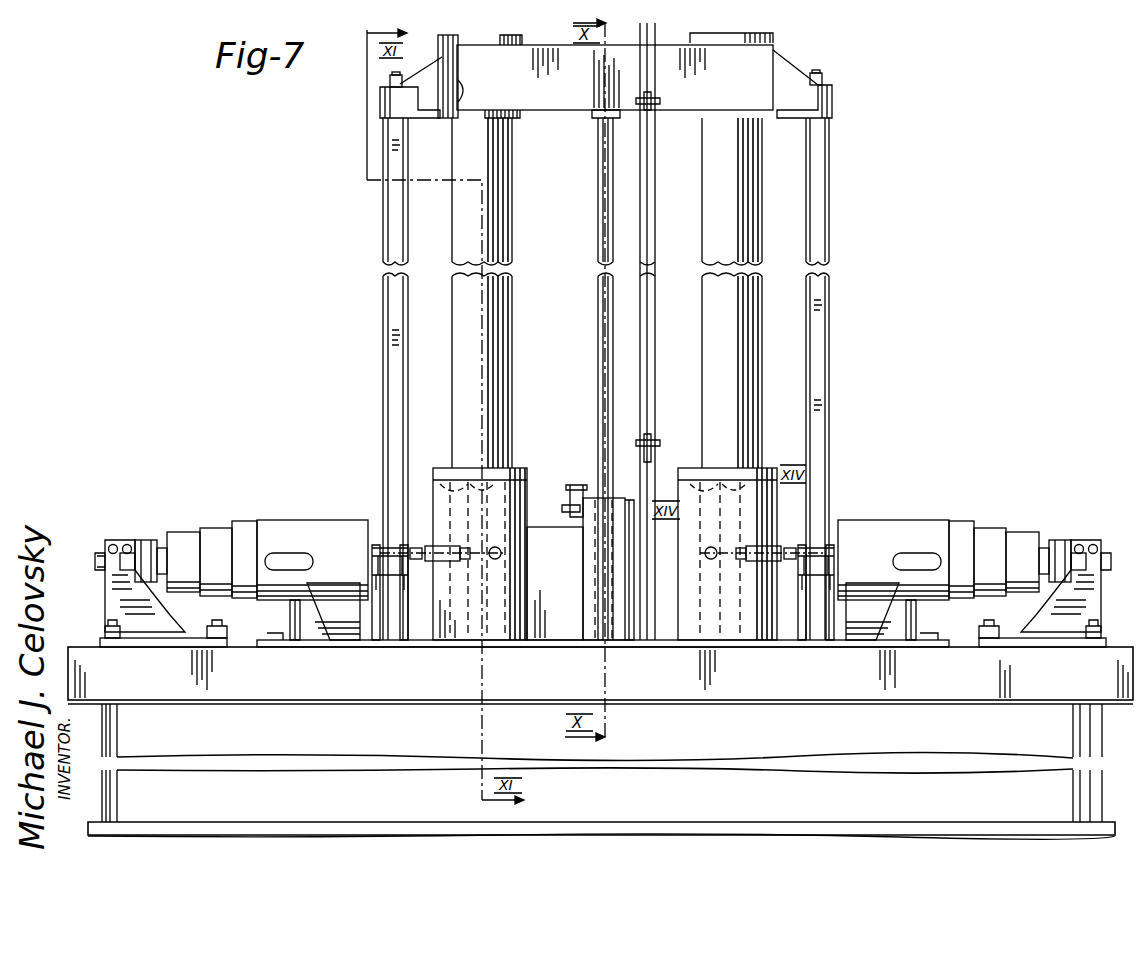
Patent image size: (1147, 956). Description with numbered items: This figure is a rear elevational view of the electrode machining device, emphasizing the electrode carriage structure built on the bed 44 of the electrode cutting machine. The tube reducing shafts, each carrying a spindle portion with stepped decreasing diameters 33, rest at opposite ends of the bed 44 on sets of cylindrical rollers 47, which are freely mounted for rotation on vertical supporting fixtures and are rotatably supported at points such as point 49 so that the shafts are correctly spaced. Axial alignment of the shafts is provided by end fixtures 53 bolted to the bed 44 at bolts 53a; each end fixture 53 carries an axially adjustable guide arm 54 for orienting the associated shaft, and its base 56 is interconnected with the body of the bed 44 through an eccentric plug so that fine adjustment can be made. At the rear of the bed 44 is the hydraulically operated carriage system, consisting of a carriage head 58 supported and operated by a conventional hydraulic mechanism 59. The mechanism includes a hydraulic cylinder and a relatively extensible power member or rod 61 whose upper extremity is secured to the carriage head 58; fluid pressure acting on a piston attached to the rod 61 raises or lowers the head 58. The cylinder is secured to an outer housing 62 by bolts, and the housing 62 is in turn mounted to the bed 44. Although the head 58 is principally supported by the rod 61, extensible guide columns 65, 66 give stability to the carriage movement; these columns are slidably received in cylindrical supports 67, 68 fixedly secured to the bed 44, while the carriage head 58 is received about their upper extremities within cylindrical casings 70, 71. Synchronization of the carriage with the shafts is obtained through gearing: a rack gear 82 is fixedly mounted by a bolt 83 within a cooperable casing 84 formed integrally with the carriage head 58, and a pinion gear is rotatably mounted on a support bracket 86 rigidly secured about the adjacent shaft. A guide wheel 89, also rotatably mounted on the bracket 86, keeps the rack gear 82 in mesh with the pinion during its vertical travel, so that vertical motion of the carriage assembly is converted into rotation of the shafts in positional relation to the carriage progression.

The decreasing diameter 33 is at (350, 520).
The bed 44 is at (64, 656).
The cylindrical roller 47 is at (326, 610).
The support point 49 is at (290, 612).
The end fixture 53 is at (1104, 528).
The bolt 53a is at (108, 636).
The axially adjustable guide arm 54 is at (148, 540).
The base 56 is at (165, 648).
The carriage head 58 is at (553, 97).
The hydraulic mechanism 59 is at (582, 486).
The extensible power member 61 is at (598, 354).
The outer housing 62 is at (592, 520).
The guide column 65 is at (452, 358).
The guide column 66 is at (702, 358).
The cylindrical support 67 is at (445, 468).
The cylindrical support 68 is at (688, 468).
The cylindrical casing 70 is at (448, 118).
The cylindrical casing 71 is at (707, 97).
The rack gear 82 is at (396, 235).
The bolt 83 is at (402, 78).
The casing 84 is at (380, 105).
The support bracket 86 is at (376, 542).
The guide wheel 89 is at (390, 548).